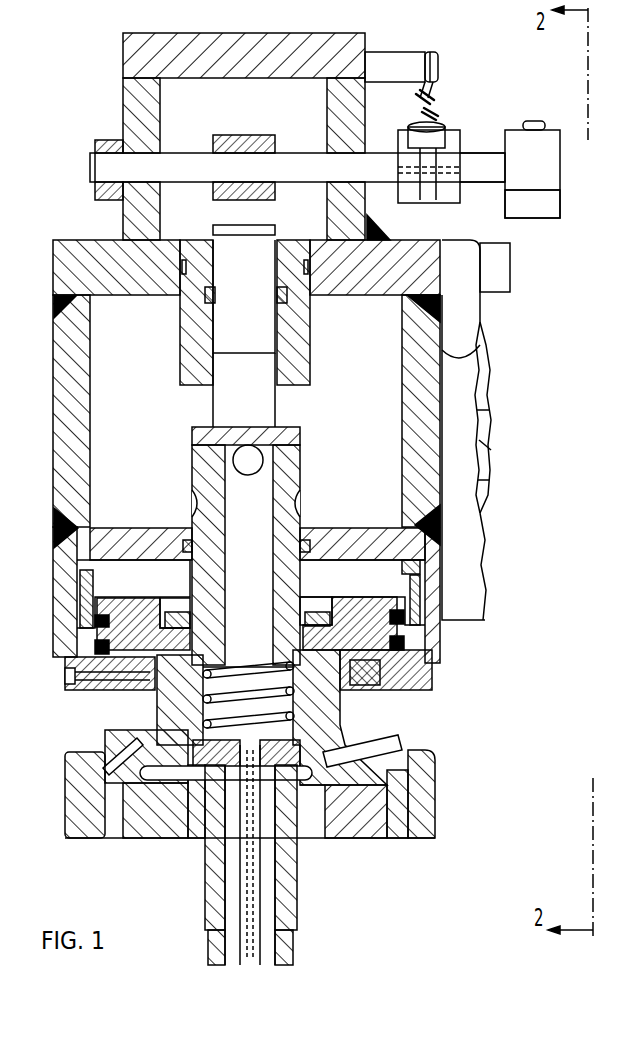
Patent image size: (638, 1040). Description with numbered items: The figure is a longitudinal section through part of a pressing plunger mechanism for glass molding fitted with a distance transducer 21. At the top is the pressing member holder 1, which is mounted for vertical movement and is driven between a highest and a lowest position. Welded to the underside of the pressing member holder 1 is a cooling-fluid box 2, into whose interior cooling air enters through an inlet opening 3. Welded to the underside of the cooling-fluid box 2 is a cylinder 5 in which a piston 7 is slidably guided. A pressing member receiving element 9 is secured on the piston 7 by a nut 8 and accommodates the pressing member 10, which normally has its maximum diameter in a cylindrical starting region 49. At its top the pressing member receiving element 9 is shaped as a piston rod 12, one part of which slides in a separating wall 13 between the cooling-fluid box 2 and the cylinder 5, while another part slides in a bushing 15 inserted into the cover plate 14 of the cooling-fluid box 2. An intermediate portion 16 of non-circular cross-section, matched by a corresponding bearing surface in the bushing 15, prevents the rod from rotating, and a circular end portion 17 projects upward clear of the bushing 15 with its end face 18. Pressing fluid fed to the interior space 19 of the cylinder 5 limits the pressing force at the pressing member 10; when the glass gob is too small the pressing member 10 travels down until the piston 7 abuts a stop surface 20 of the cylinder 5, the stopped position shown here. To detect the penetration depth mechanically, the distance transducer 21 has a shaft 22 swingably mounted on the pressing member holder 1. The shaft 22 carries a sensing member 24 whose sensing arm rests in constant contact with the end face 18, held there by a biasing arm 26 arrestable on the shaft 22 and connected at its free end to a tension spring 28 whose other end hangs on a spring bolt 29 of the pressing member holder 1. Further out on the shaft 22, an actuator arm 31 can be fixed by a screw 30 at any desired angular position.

The pressing member holder 1 is at (116, 68).
The cooling-fluid box 2 is at (470, 355).
The inlet opening 3 is at (489, 446).
The cylinder 5 is at (445, 563).
The piston 7 is at (380, 630).
The nut 8 is at (330, 600).
The pressing member receiving element 9 is at (345, 712).
The pressing member 10 is at (300, 875).
The piston rod 12 is at (186, 460).
The separating wall 13 is at (137, 540).
The cover plate 14 is at (70, 240).
The bushing 15 is at (185, 362).
The intermediate portion 16 is at (283, 398).
The end portion 17 is at (265, 252).
The end face 18 is at (225, 230).
The interior space 19 is at (395, 576).
The stop surface 20 is at (85, 650).
The distance transducer 21 is at (479, 144).
The shaft 22 is at (98, 168).
The sensing member 24 is at (244, 130).
The biasing arm 26 is at (450, 202).
The tension spring 28 is at (440, 118).
The spring bolt 29 is at (403, 52).
The screw 30 is at (540, 121).
The actuator arm 31 is at (546, 218).
The cylindrical starting region 49 is at (205, 865).